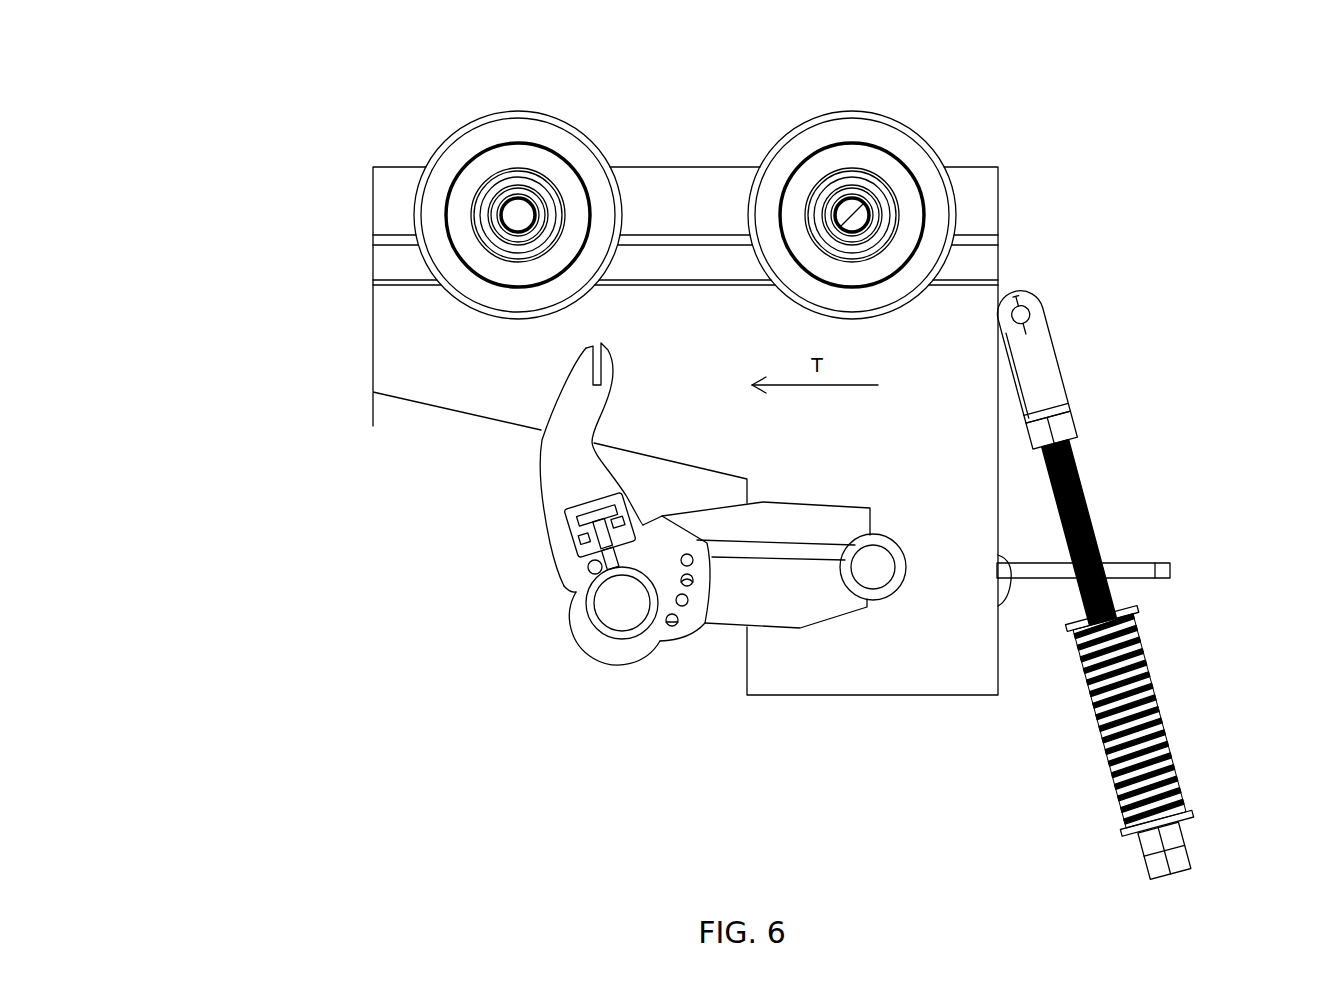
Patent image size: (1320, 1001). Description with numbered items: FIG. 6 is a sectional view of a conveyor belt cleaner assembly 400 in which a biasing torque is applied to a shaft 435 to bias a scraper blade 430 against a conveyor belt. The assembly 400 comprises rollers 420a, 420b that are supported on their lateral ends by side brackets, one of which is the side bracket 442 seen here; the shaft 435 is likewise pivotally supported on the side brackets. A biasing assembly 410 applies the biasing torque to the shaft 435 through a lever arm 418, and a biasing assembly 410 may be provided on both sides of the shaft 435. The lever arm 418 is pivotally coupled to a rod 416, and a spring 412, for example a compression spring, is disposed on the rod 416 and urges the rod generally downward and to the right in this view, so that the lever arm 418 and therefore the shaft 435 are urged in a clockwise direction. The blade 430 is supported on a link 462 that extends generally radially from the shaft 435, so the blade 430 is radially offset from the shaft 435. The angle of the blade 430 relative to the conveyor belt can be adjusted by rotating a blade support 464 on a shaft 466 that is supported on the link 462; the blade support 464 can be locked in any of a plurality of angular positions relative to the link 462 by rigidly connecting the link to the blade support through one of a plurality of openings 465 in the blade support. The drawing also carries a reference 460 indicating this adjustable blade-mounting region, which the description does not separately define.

The conveyor belt cleaner assembly 400 is at (150, 140).
The biasing assembly 410 is at (1278, 412).
The spring 412 is at (1168, 753).
The rod 416 is at (1097, 547).
The lever arm 418 is at (1003, 397).
The roller 420a is at (517, 110).
The roller 420b is at (853, 110).
The scraper blade 430 is at (542, 497).
The shaft 435 is at (893, 597).
The side bracket 442 is at (998, 207).
The linkage assembly 460 is at (498, 787).
The link 462 is at (783, 626).
The blade support 464 is at (621, 648).
The openings 465 is at (674, 626).
The shaft 466 is at (590, 615).